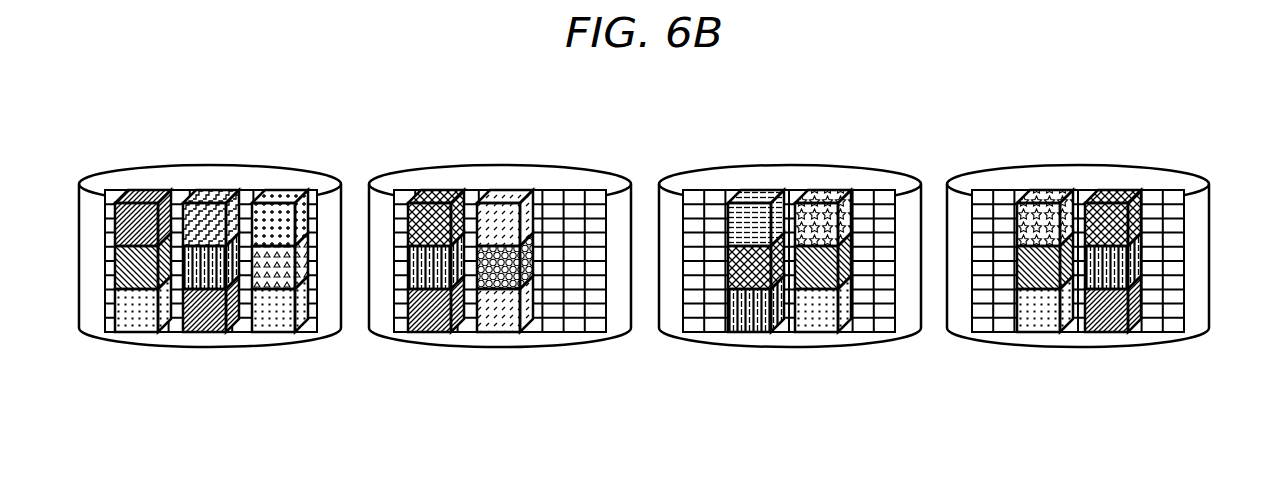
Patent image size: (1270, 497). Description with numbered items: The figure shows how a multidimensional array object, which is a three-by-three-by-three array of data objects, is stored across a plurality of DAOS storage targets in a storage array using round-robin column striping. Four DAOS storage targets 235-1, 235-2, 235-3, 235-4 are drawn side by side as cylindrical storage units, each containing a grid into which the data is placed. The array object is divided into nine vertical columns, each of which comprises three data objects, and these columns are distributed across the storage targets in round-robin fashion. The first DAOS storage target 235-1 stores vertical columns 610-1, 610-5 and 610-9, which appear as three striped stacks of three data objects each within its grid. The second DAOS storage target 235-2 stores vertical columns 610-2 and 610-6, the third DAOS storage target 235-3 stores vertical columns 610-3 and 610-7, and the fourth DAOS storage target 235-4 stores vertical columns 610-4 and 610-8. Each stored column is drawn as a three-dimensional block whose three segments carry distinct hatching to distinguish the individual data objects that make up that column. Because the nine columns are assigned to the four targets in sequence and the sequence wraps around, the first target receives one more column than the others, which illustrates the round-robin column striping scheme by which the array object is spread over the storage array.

The DAOS storage target 235-1 is at (207, 348).
The DAOS storage target 235-2 is at (498, 348).
The DAOS storage target 235-3 is at (786, 348).
The DAOS storage target 235-4 is at (1073, 348).
The vertical column 610-1 is at (143, 190).
The vertical column 610-2 is at (428, 193).
The vertical column 610-3 is at (745, 193).
The vertical column 610-4 is at (1035, 193).
The vertical column 610-5 is at (213, 190).
The vertical column 610-6 is at (507, 193).
The vertical column 610-7 is at (830, 193).
The vertical column 610-8 is at (1120, 193).
The vertical column 610-9 is at (277, 190).